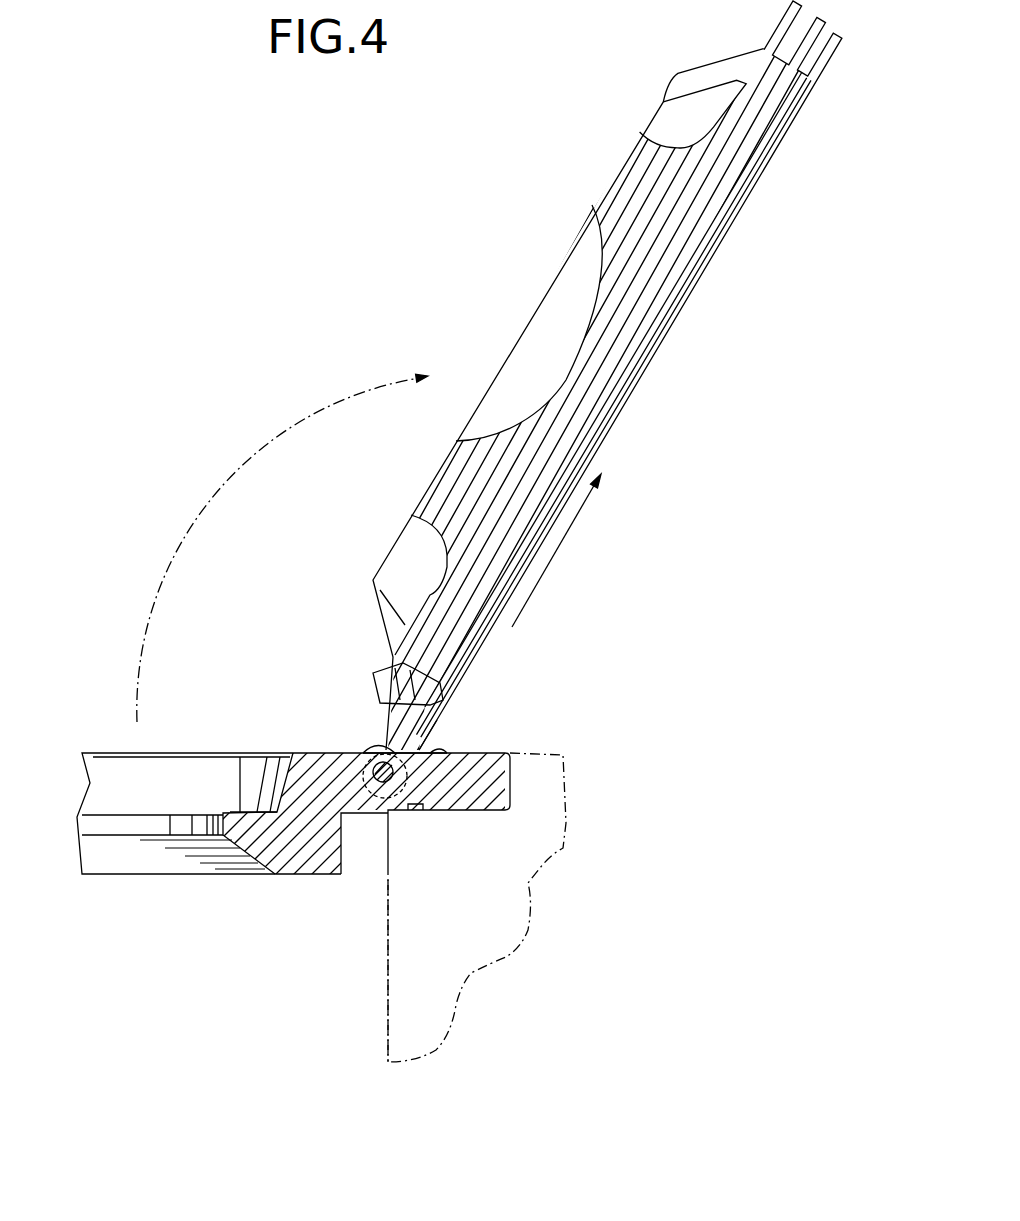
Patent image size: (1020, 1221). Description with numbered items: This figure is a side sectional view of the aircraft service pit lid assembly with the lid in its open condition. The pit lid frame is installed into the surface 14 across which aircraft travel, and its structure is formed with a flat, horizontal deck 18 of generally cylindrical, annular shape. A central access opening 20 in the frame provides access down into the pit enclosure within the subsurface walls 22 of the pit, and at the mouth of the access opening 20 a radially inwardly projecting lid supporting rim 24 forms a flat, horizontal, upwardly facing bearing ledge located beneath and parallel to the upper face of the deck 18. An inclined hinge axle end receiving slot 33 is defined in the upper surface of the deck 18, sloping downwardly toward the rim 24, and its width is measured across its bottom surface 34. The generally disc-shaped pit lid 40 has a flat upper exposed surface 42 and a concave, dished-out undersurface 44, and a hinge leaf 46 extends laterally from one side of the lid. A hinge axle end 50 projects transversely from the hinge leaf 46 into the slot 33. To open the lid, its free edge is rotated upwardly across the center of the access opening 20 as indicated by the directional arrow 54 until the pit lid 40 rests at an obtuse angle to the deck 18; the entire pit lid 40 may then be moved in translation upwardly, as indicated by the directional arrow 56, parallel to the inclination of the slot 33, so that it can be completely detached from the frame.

The surface 14 is at (562, 745).
The deck 18 is at (319, 776).
The access opening 20 is at (209, 852).
The subsurface walls 22 is at (387, 967).
The lid supporting rim 24 is at (242, 810).
The hinge axle end receiving slot 33 is at (437, 752).
The bottom surface 34 is at (395, 780).
The pit lid 40 is at (510, 382).
The upper exposed surface 42 is at (677, 307).
The undersurface 44 is at (530, 318).
The hinge leaf 46 is at (445, 724).
The hinge axle end 50 is at (378, 765).
The directional arrow 54 is at (210, 503).
The directional arrow 56 is at (568, 540).